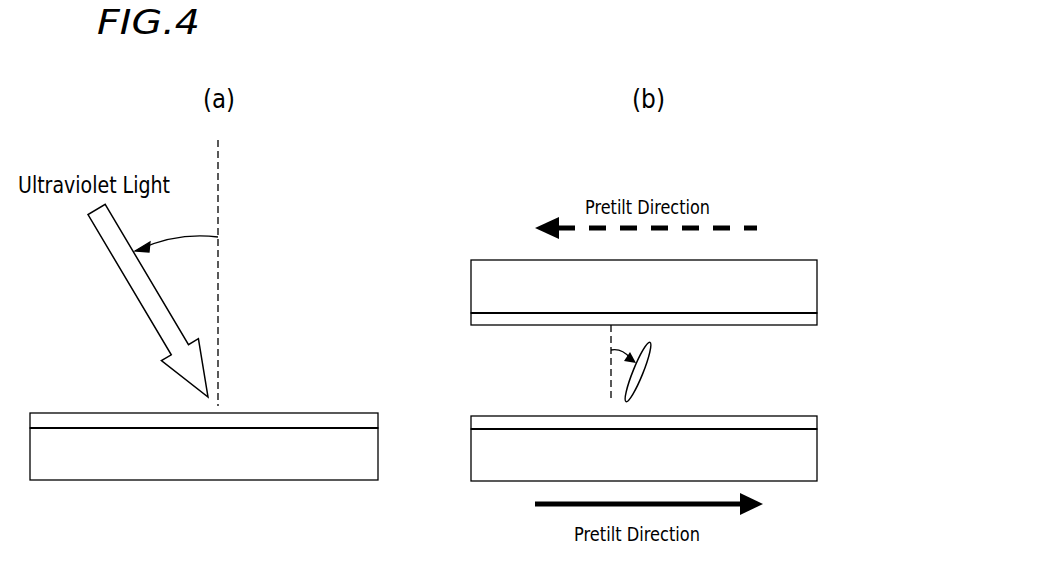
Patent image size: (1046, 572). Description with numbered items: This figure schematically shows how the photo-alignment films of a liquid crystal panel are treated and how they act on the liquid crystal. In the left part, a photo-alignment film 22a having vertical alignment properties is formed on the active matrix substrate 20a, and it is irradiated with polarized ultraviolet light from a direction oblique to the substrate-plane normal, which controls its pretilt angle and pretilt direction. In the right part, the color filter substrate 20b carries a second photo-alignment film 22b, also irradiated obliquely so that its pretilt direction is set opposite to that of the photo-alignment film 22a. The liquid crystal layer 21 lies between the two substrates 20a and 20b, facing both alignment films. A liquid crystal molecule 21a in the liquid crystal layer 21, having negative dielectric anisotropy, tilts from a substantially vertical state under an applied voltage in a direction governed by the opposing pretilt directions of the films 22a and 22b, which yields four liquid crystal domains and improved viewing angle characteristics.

The active matrix substrate 20a is at (370, 465).
The photo-alignment film 22a is at (370, 420).
The color filter substrate 20b is at (810, 288).
The photo-alignment film 22b is at (813, 322).
The liquid crystal layer 21 is at (744, 364).
The liquid crystal molecule 21a is at (647, 367).